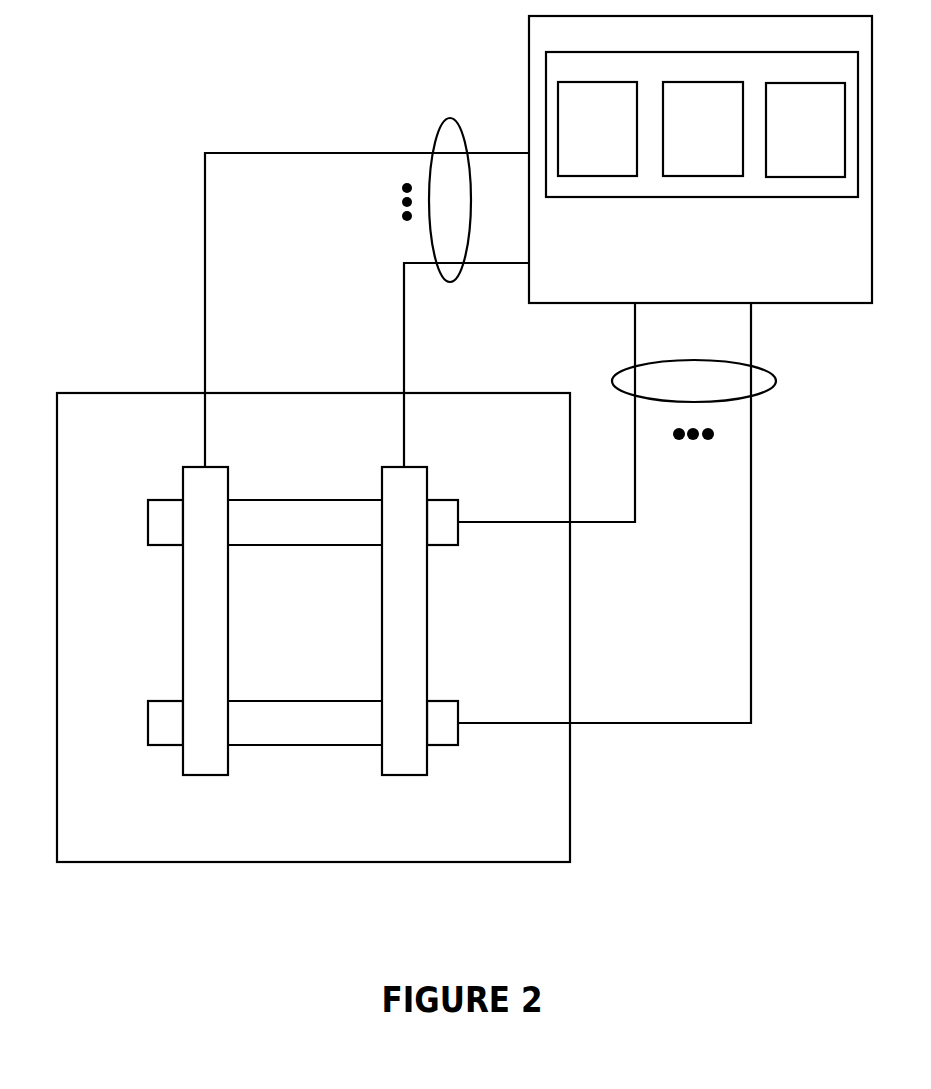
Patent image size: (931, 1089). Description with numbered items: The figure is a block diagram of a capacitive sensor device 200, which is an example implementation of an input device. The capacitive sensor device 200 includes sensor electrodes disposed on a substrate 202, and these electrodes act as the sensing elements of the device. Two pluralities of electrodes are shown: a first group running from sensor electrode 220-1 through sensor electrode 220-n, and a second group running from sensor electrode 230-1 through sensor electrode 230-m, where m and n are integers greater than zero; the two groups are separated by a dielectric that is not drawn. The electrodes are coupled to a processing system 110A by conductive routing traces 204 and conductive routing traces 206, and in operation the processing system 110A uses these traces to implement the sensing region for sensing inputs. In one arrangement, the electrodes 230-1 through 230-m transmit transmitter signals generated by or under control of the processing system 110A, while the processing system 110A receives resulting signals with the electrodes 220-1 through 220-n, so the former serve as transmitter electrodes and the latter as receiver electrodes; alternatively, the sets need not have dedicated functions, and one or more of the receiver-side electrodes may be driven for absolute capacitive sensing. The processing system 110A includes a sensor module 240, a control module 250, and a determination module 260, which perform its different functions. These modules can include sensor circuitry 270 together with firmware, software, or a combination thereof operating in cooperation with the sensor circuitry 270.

The capacitive sensor device 200 is at (169, 60).
The substrate 202 is at (65, 392).
The conductive routing traces 204 is at (455, 120).
The conductive routing traces 206 is at (777, 381).
The sensor electrode 220-1 is at (228, 477).
The sensor electrode 220-n is at (475, 467).
The sensor electrode 230-1 is at (448, 545).
The sensor electrode 230-m is at (289, 701).
The sensor module 240 is at (580, 140).
The control module 250 is at (686, 140).
The determination module 260 is at (788, 140).
The sensor circuitry 270 is at (546, 63).
The processing system 110A is at (678, 271).